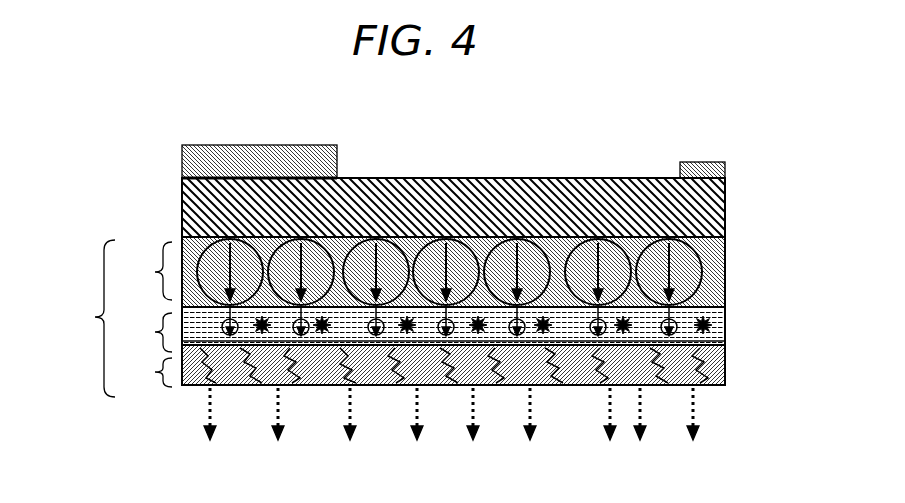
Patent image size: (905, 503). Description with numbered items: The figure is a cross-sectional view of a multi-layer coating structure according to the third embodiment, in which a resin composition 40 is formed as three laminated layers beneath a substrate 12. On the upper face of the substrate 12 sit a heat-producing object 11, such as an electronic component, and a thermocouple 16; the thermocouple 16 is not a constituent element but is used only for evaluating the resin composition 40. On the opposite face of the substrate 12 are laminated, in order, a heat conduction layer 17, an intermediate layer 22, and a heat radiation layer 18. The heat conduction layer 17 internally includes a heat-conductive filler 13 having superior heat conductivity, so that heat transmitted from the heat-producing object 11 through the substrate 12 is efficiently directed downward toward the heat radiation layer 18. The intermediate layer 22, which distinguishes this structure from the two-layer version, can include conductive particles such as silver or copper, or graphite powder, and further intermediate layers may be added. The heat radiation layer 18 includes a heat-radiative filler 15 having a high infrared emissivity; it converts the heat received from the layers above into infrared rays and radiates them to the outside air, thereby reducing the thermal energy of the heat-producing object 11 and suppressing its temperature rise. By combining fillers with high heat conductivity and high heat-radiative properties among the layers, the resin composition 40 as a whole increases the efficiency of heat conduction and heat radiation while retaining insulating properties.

The heat-producing object 11 is at (318, 144).
The substrate 12 is at (478, 178).
The thermocouple 16 is at (720, 163).
The heat-conductive filler 13 is at (700, 262).
The heat conduction layer 17 is at (155, 272).
The intermediate layer 22 is at (155, 332).
The heat radiation layer 18 is at (155, 372).
The resin composition 40 is at (387, 317).
The heat-radiative filler 15 is at (698, 380).